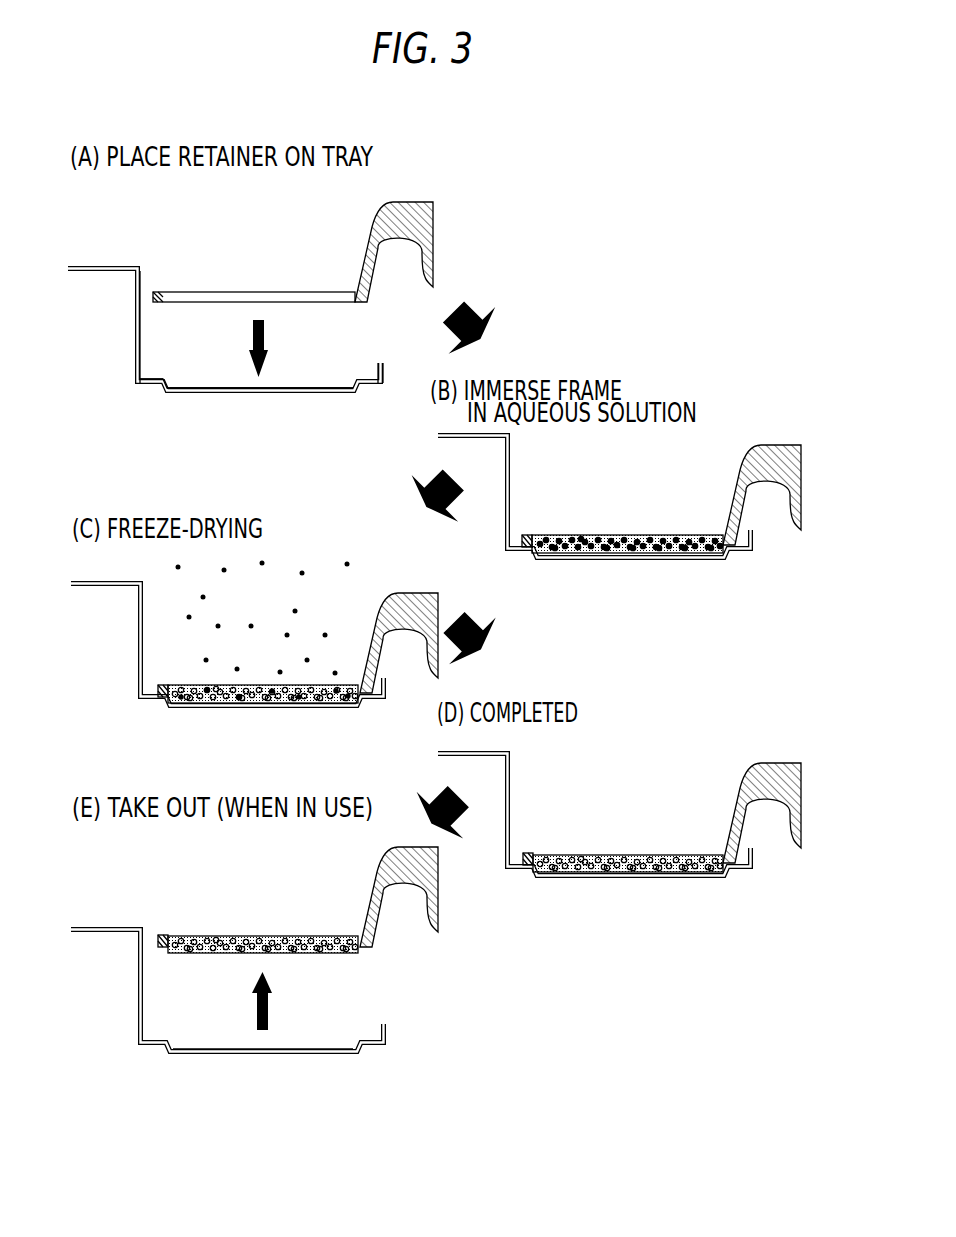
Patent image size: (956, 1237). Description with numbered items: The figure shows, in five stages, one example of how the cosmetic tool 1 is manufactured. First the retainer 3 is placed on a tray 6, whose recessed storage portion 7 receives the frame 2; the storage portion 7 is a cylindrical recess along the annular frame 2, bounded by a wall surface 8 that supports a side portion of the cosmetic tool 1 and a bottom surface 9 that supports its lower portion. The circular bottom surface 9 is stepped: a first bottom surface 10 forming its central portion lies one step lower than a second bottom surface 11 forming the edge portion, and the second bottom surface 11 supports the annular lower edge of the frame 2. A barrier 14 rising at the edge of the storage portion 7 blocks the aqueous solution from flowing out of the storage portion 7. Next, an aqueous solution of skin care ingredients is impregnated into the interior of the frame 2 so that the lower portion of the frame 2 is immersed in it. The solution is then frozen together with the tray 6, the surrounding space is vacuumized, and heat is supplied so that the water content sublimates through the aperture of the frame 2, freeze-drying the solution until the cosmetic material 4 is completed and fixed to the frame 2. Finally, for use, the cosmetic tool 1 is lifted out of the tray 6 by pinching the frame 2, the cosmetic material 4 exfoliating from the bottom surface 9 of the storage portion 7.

The cosmetic tool 1 is at (479, 855).
The frame 2 is at (530, 852).
The retainer 3 is at (430, 202).
The cosmetic material 4 is at (593, 853).
The tray 6 is at (110, 267).
The storage portion 7 is at (352, 346).
The wall surface 8 is at (140, 357).
The bottom surface 9 is at (222, 330).
The first bottom surface 10 is at (170, 387).
The second bottom surface 11 is at (160, 377).
The barrier 14 is at (382, 365).